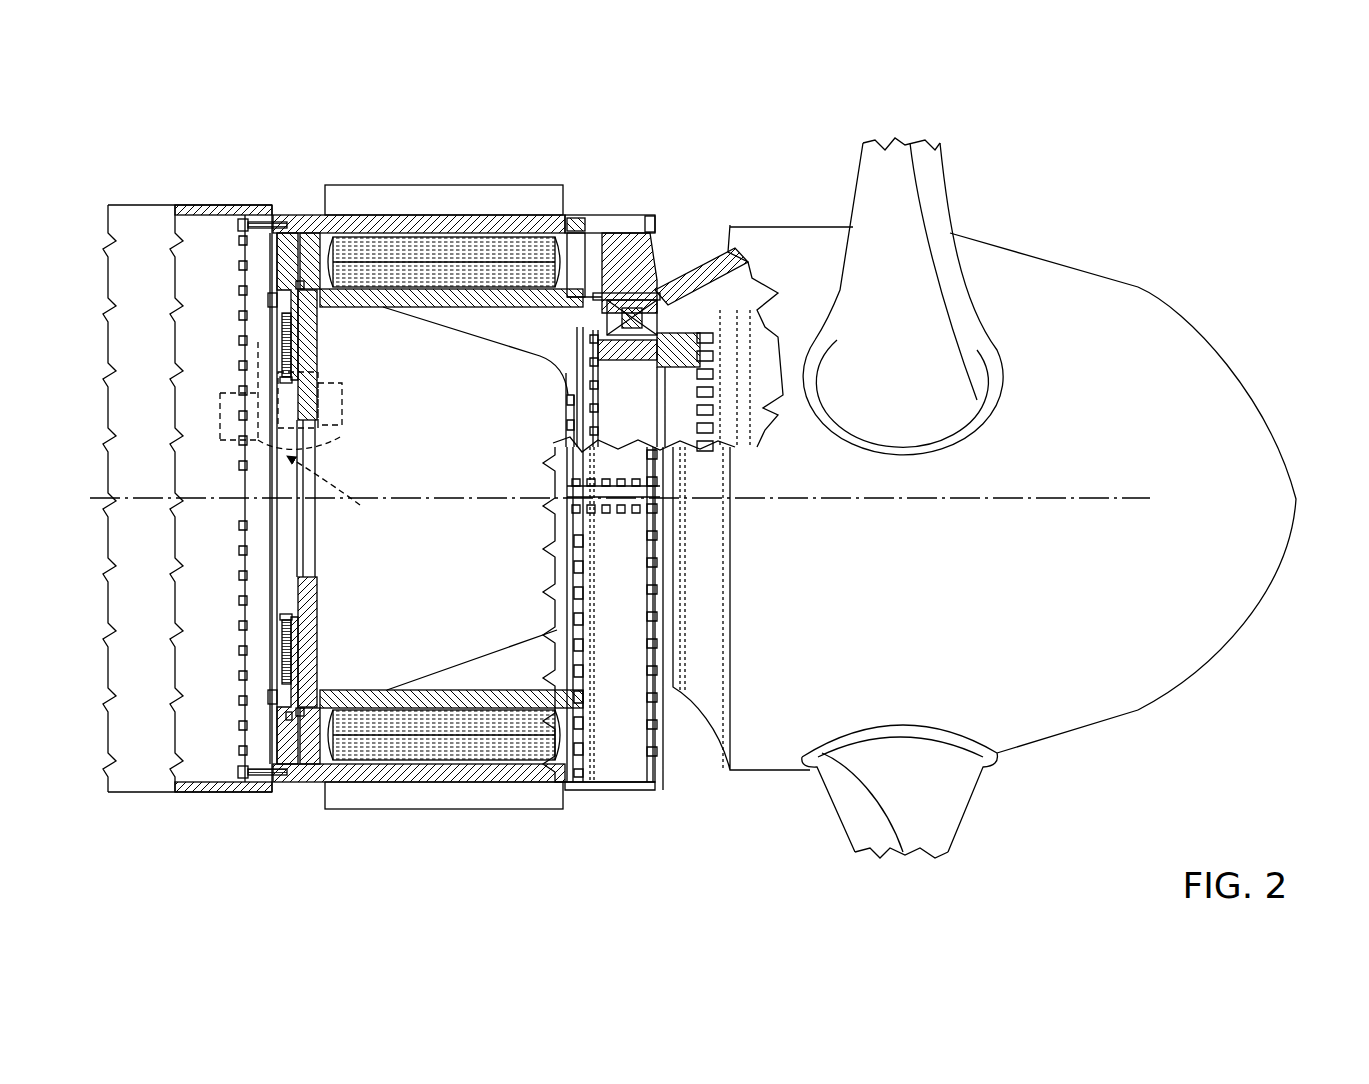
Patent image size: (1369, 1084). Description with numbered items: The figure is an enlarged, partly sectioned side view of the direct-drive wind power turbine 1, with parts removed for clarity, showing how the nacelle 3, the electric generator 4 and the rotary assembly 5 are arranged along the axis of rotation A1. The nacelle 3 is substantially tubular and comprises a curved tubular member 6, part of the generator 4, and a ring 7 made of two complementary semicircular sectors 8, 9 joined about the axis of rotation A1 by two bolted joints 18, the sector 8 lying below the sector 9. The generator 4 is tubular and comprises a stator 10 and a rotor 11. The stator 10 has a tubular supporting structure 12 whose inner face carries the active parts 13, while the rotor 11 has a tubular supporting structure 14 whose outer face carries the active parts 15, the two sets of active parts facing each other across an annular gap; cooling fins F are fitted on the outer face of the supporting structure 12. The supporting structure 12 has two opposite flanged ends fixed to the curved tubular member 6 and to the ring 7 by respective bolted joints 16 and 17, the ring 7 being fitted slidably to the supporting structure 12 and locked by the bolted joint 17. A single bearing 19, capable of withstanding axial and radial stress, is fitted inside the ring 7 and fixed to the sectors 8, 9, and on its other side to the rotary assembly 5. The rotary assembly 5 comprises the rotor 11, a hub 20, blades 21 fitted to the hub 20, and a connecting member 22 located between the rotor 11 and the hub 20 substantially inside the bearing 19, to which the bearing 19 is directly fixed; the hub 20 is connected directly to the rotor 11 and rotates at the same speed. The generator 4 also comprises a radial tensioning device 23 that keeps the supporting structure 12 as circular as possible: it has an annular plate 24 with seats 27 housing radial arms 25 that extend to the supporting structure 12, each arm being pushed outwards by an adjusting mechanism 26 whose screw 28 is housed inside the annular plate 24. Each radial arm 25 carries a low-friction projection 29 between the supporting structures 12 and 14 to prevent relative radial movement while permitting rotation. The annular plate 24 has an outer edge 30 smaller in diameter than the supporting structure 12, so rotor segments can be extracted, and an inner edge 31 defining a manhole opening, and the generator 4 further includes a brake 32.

The wind power turbine 1 is at (1140, 188).
The nacelle 3 is at (306, 134).
The electric generator 4 is at (483, 822).
The rotary assembly 5 is at (1152, 245).
The curved tubular member 6 is at (205, 207).
The ring 7 is at (630, 190).
The sector 8 is at (625, 778).
The sector 9 is at (625, 265).
The stator 10 is at (381, 178).
The rotor 11 is at (418, 322).
The supporting structure 12 is at (357, 206).
The active parts 13 is at (460, 240).
The supporting structure 14 is at (520, 312).
The active parts 15 is at (470, 278).
The bolted joint 16 is at (282, 205).
The bolted joint 17 is at (662, 214).
The bolted joints 18 is at (625, 535).
The bearing 19 is at (662, 325).
The hub 20 is at (1216, 377).
The blades 21 is at (927, 190).
The connecting member 22 is at (680, 375).
The radial tensioning device 23 is at (222, 311).
The annular plate 24 is at (283, 628).
The radial arms 25 is at (287, 255).
The adjusting mechanisms 26 is at (310, 350).
The seats 27 is at (304, 316).
The screw 28 is at (283, 345).
The projection 29 is at (298, 287).
The outer edge 30 is at (290, 720).
The inner edge 31 is at (299, 390).
The brake 32 is at (338, 491).
The cooling fins F is at (462, 170).
The axis of rotation A1 is at (1044, 500).